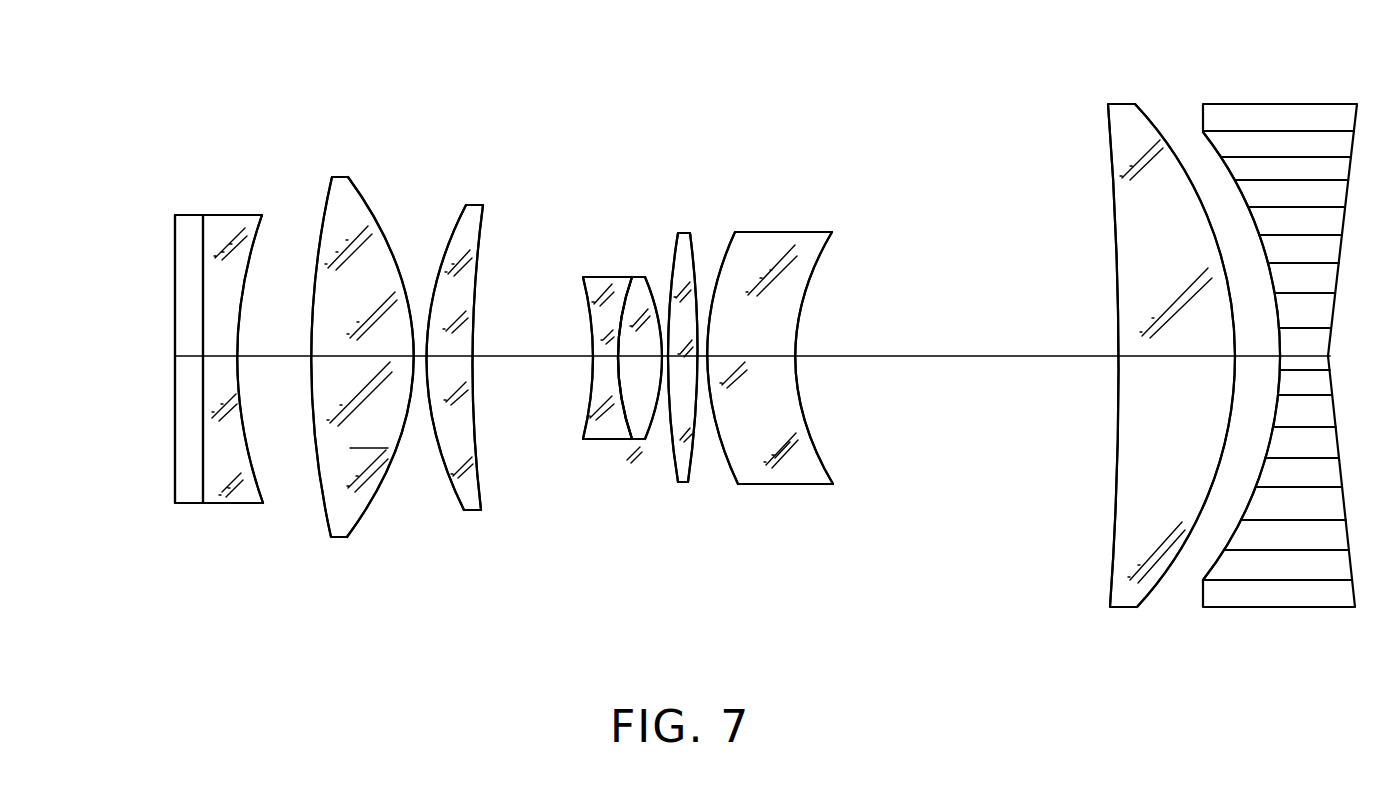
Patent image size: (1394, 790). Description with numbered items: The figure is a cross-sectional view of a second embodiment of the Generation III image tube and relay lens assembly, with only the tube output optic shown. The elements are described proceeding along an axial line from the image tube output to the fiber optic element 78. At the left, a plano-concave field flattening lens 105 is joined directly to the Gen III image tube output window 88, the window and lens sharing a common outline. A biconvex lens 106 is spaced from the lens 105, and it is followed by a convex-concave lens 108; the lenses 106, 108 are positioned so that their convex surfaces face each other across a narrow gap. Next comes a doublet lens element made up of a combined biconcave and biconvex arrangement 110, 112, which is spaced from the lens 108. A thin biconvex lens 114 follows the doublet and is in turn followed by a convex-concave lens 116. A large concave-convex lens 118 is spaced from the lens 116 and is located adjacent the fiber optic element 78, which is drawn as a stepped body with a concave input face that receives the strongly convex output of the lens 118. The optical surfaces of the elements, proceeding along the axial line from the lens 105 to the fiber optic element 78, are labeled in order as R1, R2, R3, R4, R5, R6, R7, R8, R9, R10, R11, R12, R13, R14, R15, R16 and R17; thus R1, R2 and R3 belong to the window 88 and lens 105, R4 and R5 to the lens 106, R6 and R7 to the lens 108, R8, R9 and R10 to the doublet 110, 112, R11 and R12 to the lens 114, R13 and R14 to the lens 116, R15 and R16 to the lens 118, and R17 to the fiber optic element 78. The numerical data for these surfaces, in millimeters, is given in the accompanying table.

The fiber optic element 78 is at (1287, 596).
The Gen III image tube output window 88 is at (185, 503).
The plano-concave field flattening lens 105 is at (242, 497).
The biconvex lens 106 is at (345, 519).
The convex-concave lens 108 is at (469, 501).
The biconcave lens 110 is at (604, 425).
The biconvex lens 112 is at (640, 422).
The biconvex lens 114 is at (680, 475).
The convex-concave lens 116 is at (815, 470).
The concave-convex lens 118 is at (1125, 596).
The surface R1 is at (175, 262).
The surface R2 is at (203, 215).
The surface R3 is at (244, 308).
The surface R4 is at (327, 190).
The surface R5 is at (377, 217).
The surface R6 is at (450, 220).
The surface R7 is at (479, 262).
The surface R8 is at (585, 311).
The surface R9 is at (631, 277).
The surface R10 is at (657, 279).
The surface R11 is at (678, 233).
The surface R12 is at (692, 245).
The surface R13 is at (735, 232).
The surface R14 is at (812, 282).
The surface R15 is at (1108, 140).
The surface R16 is at (1145, 120).
The surface R17 is at (1203, 132).